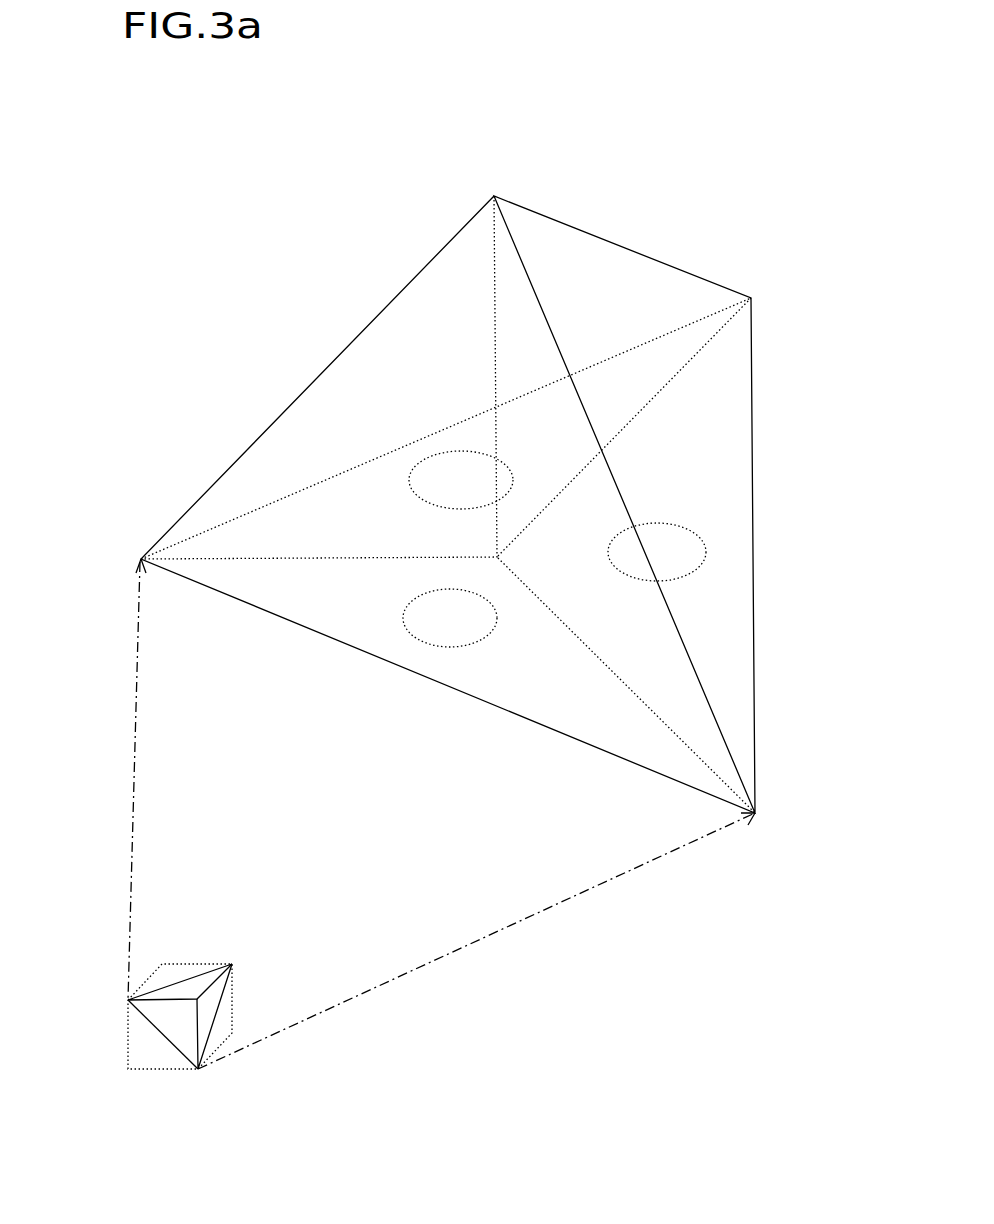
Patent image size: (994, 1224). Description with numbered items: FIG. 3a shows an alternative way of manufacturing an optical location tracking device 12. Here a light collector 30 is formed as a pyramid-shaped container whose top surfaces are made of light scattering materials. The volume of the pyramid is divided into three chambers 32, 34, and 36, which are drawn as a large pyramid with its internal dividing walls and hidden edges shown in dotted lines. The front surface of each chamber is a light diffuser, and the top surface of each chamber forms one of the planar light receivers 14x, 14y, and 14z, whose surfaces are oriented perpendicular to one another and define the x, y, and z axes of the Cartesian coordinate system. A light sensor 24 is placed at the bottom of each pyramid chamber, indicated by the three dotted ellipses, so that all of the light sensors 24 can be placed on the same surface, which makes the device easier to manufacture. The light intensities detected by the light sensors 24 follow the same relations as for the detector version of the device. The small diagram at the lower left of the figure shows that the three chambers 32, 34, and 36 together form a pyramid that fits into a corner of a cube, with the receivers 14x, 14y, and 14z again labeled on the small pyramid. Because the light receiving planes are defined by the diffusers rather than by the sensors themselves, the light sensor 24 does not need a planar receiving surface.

The optical location tracking device 12 is at (290, 594).
The planar light receiver 14x is at (386, 577).
The planar light receiver 14y is at (705, 629).
The planar light receiver 14z is at (192, 992).
The light sensor 24 is at (622, 575).
The light collector 30 is at (540, 210).
The chamber 32 is at (330, 505).
The chamber 34 is at (712, 392).
The chamber 36 is at (402, 345).